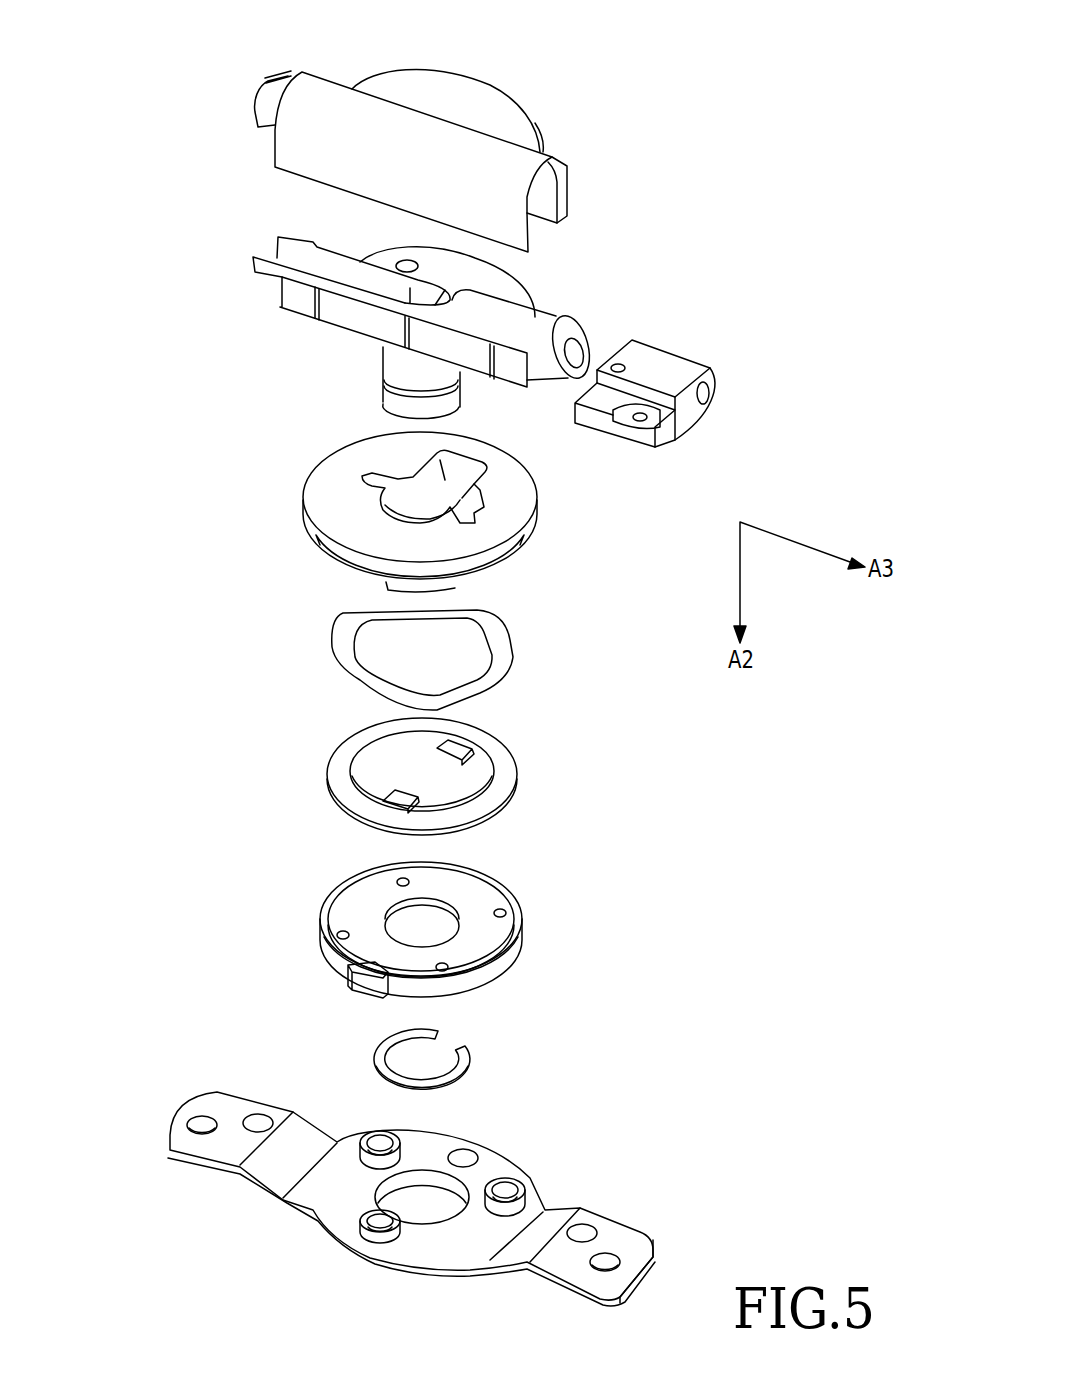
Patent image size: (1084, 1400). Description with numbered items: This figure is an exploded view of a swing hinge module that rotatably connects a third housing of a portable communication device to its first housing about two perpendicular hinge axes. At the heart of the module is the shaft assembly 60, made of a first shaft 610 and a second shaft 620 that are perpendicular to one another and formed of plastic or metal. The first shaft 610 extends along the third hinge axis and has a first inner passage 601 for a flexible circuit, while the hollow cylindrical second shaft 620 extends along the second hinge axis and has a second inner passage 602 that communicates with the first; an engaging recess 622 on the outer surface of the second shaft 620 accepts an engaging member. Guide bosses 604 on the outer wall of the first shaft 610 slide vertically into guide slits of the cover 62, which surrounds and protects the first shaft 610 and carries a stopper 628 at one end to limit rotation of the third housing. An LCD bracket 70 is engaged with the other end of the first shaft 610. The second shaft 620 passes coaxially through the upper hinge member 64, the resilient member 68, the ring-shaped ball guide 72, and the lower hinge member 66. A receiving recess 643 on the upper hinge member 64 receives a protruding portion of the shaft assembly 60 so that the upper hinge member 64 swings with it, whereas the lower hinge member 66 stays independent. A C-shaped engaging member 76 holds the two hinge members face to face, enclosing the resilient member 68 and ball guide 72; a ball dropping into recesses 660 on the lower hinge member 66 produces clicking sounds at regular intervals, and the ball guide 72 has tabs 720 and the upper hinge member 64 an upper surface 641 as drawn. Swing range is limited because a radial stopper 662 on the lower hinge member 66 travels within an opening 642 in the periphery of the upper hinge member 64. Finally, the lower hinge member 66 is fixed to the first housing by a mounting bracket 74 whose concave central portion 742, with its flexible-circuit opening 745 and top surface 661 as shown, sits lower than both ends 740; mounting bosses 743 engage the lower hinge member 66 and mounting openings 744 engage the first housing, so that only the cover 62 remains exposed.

The shaft assembly 60 is at (371, 321).
The cover 62 is at (444, 126).
The upper hinge member 64 is at (422, 534).
The lower hinge member 66 is at (445, 926).
The resilient member 68 is at (530, 661).
The LCD bracket 70 is at (697, 344).
The ball guide 72 is at (410, 776).
The mounting bracket 74 is at (407, 1213).
The engaging member 76 is at (490, 1057).
The first inner passage 601 is at (293, 252).
The second inner passage 602 is at (513, 280).
The guide boss 604 is at (305, 313).
The first shaft 610 is at (353, 315).
The second shaft 620 is at (414, 390).
The engaging recess 622 is at (460, 380).
The stopper 628 is at (278, 77).
The cap top 641 is at (500, 563).
The opening 642 is at (363, 585).
The receiving recess 643 is at (463, 497).
The recess 660 is at (502, 915).
The disk top surface 661 is at (472, 895).
The stopper 662 is at (360, 982).
The tabs 720 is at (400, 794).
The both ends 740 is at (222, 1148).
The central portion 742 is at (484, 1310).
The mounting bosses 743 is at (378, 1131).
The mounting openings 744 is at (607, 1260).
The opening 745 is at (517, 1177).